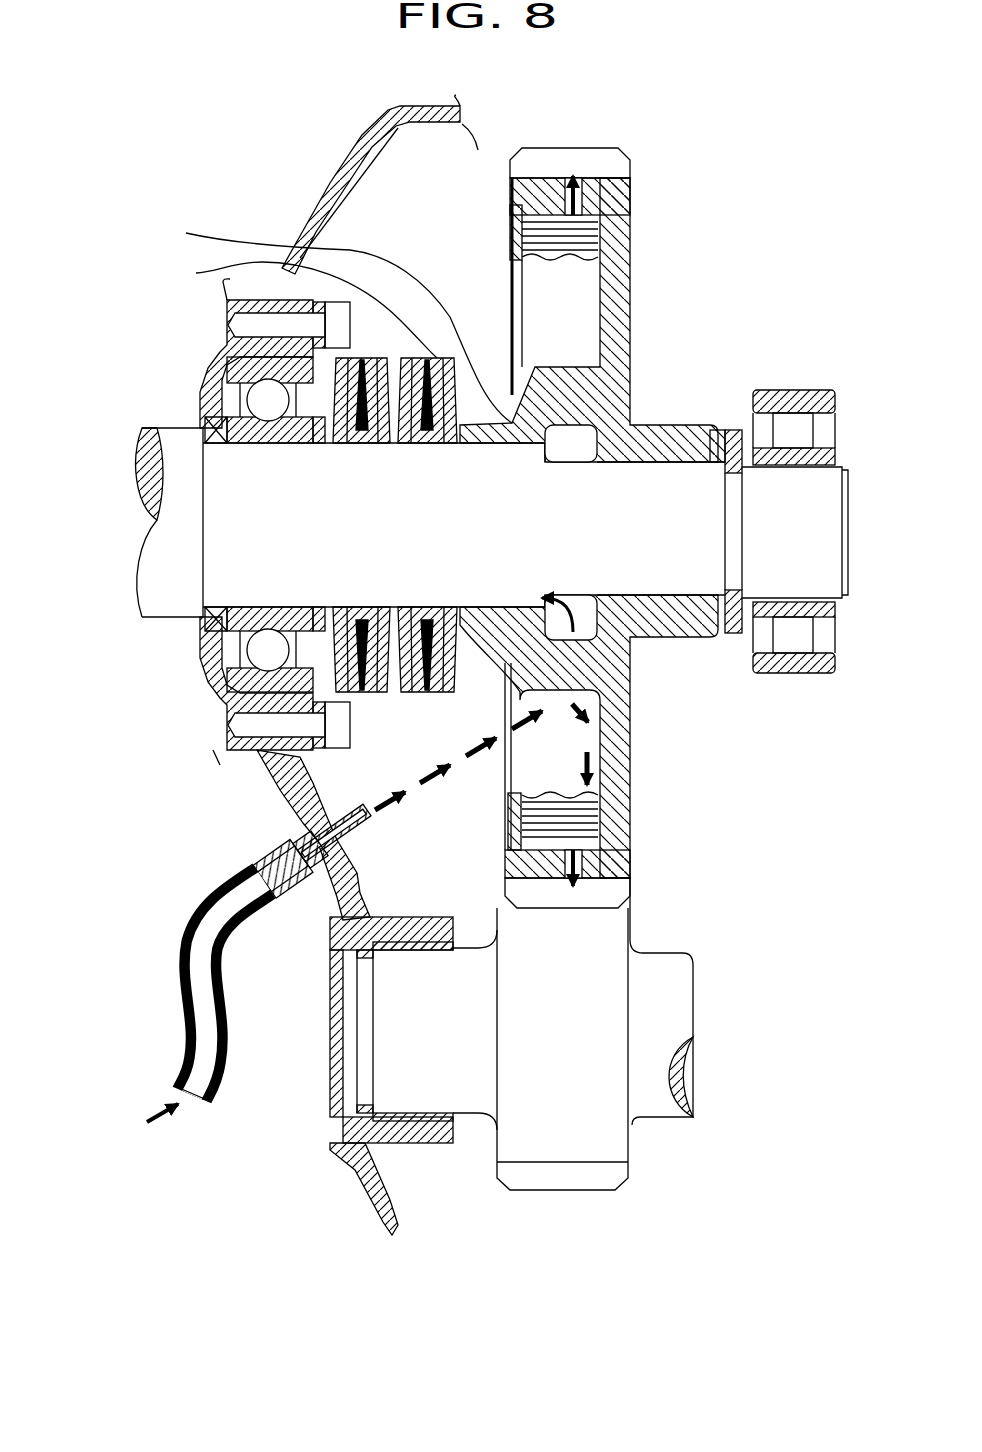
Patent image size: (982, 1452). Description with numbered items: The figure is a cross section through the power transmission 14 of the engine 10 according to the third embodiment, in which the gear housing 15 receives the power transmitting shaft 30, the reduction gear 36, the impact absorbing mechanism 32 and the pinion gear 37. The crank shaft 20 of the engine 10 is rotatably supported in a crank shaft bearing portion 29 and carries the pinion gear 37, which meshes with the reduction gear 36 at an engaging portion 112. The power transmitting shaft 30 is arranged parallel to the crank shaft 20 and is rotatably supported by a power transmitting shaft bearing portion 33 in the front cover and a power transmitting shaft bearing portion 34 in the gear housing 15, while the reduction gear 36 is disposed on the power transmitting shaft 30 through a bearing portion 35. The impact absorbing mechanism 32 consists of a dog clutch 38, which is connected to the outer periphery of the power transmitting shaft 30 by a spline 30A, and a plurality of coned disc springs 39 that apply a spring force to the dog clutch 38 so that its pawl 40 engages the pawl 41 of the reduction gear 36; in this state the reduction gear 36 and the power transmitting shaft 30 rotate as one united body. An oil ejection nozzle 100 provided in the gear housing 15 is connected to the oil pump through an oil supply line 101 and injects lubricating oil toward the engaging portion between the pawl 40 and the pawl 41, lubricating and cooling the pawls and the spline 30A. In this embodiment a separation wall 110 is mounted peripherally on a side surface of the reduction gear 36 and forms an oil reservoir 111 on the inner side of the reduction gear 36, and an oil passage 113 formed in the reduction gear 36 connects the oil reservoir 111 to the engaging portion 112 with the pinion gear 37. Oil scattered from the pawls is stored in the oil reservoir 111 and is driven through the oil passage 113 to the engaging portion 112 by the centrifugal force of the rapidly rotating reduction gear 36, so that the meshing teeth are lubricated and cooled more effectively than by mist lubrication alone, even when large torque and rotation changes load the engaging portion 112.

The engine 10 is at (638, 1212).
The power transmission 14 is at (403, 178).
The gear housing 15 is at (343, 1143).
The crank shaft 20 is at (387, 1038).
The crank shaft bearing portion 29 is at (447, 1100).
The power transmitting shaft 30 is at (218, 573).
The spline 30A is at (520, 632).
The impact absorbing mechanism 32 is at (133, 222).
The power transmitting shaft bearing portion 33 is at (807, 673).
The power transmitting shaft bearing portion 34 is at (200, 385).
The bearing portion 35 is at (690, 420).
The reduction gear 36 is at (617, 800).
The pinion gear 37 is at (603, 1133).
The dog clutch 38 is at (330, 319).
The coned disc spring 39 is at (292, 310).
The pawl 40 is at (590, 380).
The pawl 41 is at (507, 777).
The oil ejection nozzle 100 is at (333, 866).
The oil supply line 101 is at (176, 993).
The separation wall 110 is at (570, 820).
The oil reservoir 111 is at (593, 797).
The engaging portion 112 is at (610, 148).
The oil passage 113 is at (587, 197).